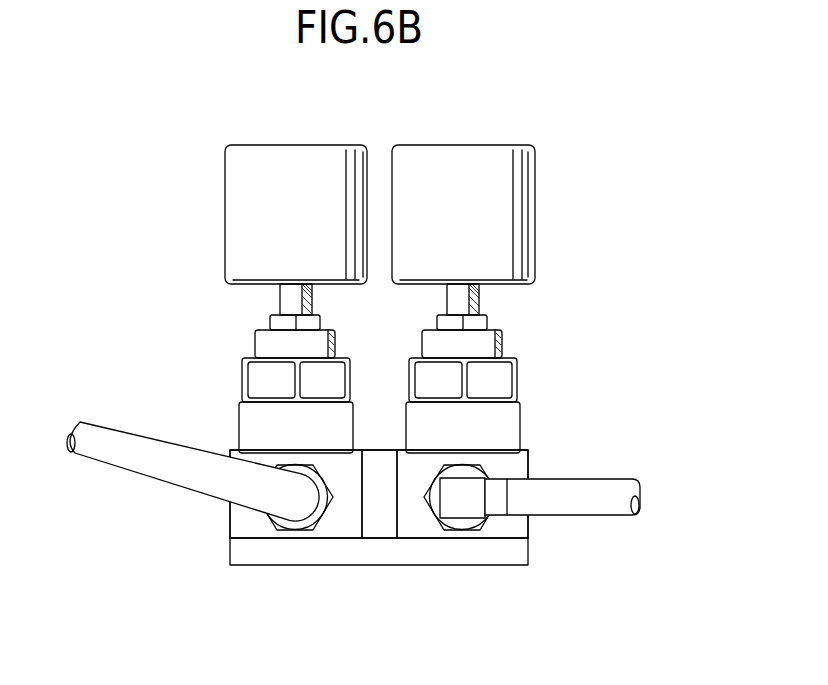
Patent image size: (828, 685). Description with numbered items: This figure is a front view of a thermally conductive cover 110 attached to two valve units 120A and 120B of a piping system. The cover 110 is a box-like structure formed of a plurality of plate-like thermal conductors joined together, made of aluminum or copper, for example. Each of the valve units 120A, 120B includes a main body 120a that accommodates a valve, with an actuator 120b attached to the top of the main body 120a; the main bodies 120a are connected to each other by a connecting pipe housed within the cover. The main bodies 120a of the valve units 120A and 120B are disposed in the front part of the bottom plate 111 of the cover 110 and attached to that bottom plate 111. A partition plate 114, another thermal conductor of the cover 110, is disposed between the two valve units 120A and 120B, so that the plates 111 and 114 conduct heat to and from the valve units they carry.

The thermally conductive cover 110 is at (415, 565).
The bottom plate 111 is at (325, 553).
The partition plate 114 is at (382, 520).
The valve unit 120A is at (210, 187).
The valve unit 120B is at (548, 187).
The main body 120a is at (244, 457).
The actuator 120b is at (313, 160).